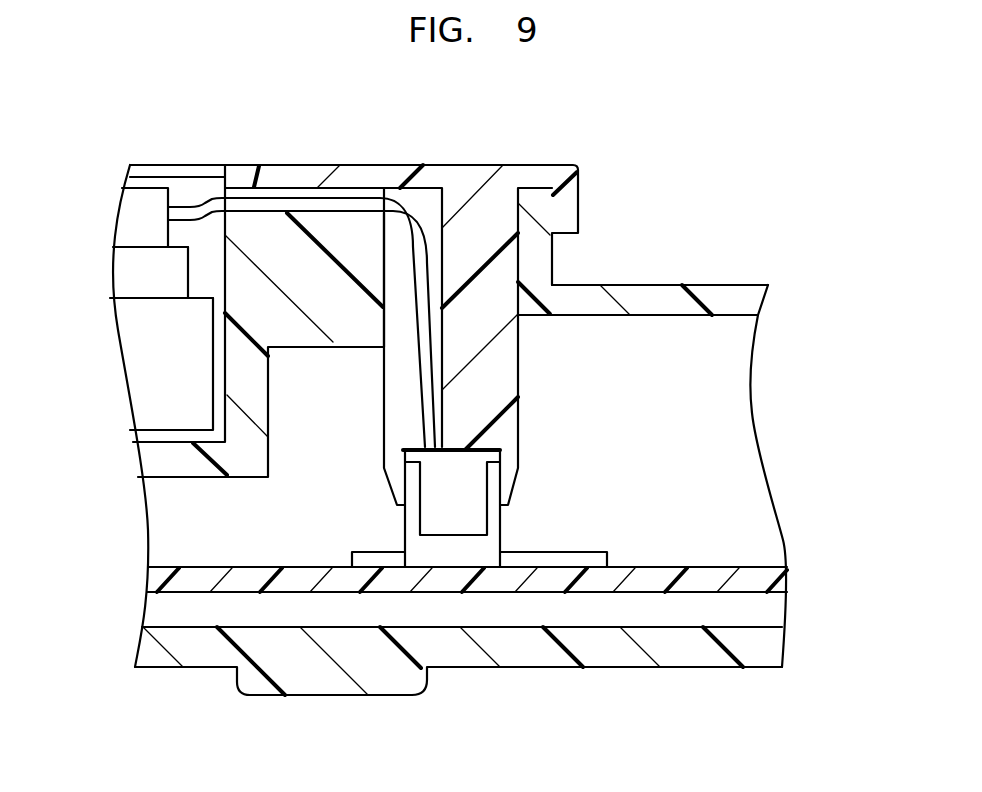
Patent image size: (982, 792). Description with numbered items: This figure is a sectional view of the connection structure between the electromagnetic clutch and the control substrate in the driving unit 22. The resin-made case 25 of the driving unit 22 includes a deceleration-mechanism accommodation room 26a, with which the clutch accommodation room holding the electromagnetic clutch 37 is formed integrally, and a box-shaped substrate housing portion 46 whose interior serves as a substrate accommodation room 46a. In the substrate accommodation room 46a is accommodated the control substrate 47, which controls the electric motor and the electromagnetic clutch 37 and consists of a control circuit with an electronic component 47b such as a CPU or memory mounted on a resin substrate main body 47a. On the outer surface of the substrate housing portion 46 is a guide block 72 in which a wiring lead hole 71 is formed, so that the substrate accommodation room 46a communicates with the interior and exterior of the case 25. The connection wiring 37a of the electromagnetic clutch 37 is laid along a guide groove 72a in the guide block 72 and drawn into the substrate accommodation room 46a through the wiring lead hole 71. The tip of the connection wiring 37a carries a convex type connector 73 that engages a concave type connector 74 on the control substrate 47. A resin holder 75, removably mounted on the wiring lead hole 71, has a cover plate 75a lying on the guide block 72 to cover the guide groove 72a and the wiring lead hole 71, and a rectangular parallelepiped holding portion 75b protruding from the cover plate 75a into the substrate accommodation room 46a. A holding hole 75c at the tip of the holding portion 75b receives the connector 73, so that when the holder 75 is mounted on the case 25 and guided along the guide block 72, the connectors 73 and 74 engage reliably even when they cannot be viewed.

The driving unit 22 is at (796, 158).
The case 25 is at (746, 272).
The deceleration-mechanism accommodation room 26a is at (203, 272).
The electromagnetic clutch 37 is at (145, 387).
The connection wiring 37a is at (417, 295).
The substrate housing portion 46 is at (681, 272).
The substrate accommodation room 46a is at (730, 410).
The control substrate 47 is at (781, 553).
The substrate main body 47a is at (653, 577).
The electronic component 47b is at (575, 555).
The wiring lead hole 71 is at (518, 248).
The guide block 72 is at (317, 236).
The guide groove 72a is at (273, 193).
The convex type connector 73 is at (455, 500).
The concave type connector 74 is at (427, 555).
The holder 75 is at (539, 157).
The cover plate 75a is at (383, 178).
The holding portion 75b is at (485, 372).
The holding hole 75c is at (463, 450).